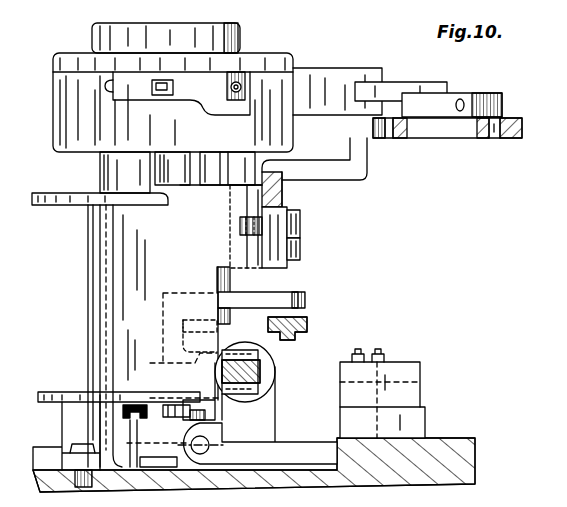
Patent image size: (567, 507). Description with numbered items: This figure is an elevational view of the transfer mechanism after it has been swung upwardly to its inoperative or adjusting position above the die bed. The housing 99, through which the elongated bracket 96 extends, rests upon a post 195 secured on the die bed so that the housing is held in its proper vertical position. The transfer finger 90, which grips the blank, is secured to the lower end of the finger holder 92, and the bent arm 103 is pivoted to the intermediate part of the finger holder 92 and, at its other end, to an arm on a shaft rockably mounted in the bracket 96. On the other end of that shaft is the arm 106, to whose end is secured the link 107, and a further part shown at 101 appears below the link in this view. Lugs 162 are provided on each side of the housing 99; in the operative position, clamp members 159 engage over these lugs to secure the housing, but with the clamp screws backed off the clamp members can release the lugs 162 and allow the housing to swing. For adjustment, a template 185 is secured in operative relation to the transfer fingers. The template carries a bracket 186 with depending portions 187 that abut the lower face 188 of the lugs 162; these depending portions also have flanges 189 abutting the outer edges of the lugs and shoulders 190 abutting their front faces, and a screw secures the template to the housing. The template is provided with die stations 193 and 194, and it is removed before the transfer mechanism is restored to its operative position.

The transfer finger 90 is at (483, 100).
The finger holder 92 is at (395, 88).
The elongated bracket 96 is at (118, 171).
The housing 99 is at (100, 268).
The pivot bearing 101 is at (258, 372).
The bent arm 103 is at (334, 80).
The arm 106 is at (250, 298).
The link 107 is at (306, 321).
The clamp member 159 is at (407, 366).
The lug 162 is at (250, 207).
The template 185 is at (456, 133).
The bracket 186 is at (358, 170).
The depending portion 187 is at (286, 196).
The lower face 188 is at (278, 185).
The flange 189 is at (268, 250).
The shoulder 190 is at (250, 184).
The die station 193 is at (497, 138).
The die station 194 is at (392, 142).
The post 195 is at (74, 421).